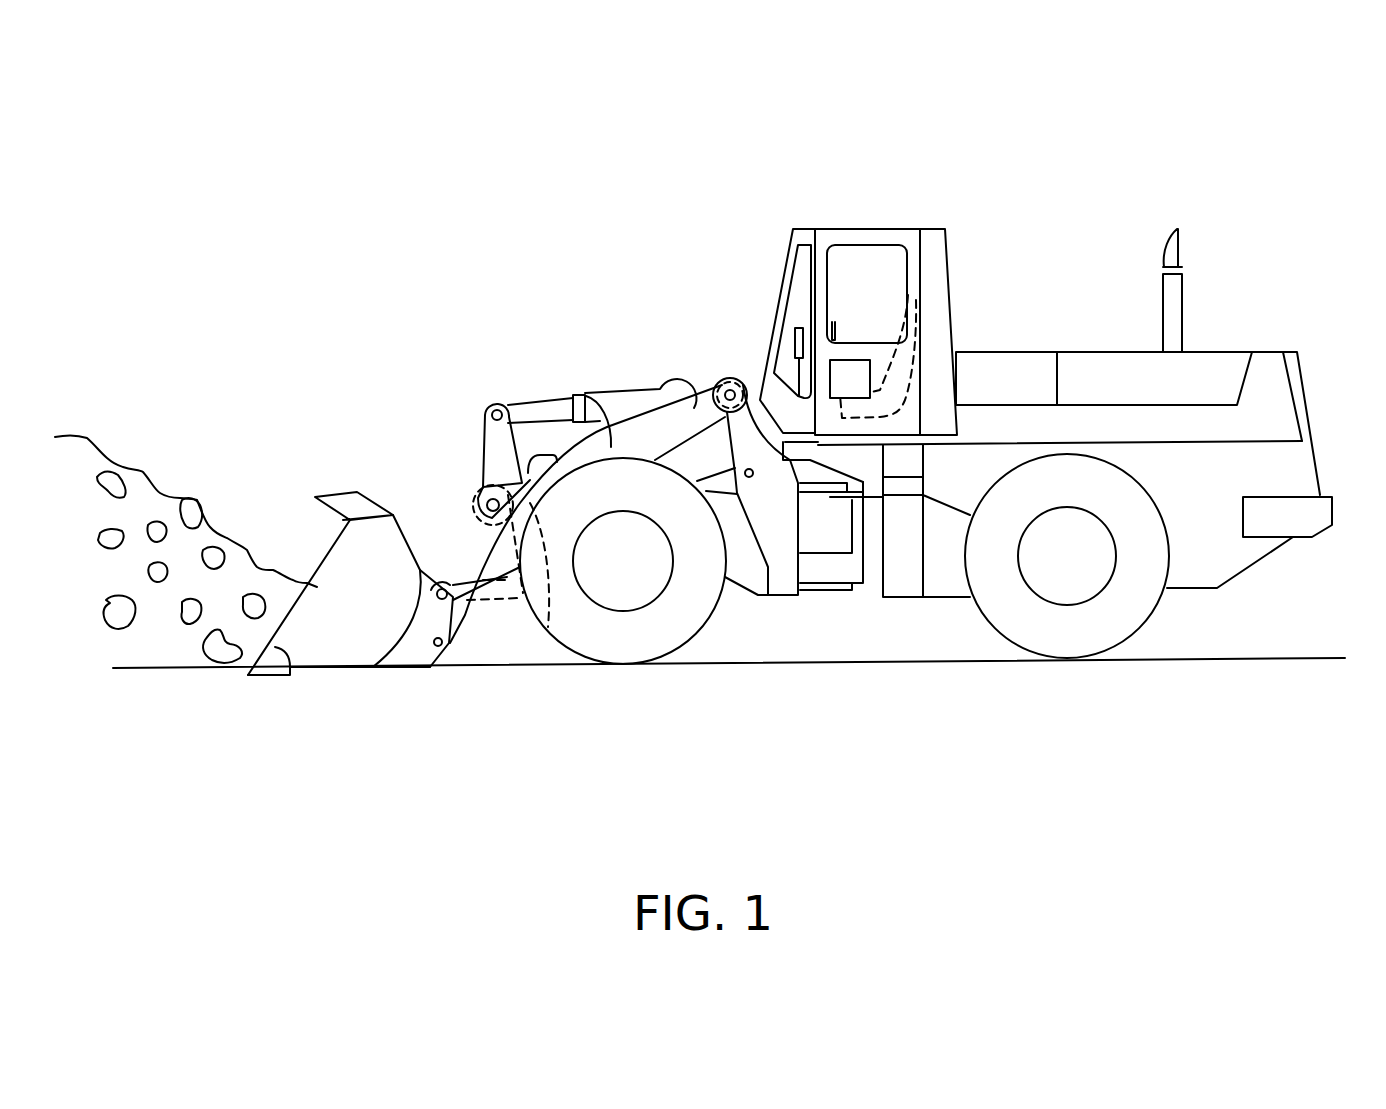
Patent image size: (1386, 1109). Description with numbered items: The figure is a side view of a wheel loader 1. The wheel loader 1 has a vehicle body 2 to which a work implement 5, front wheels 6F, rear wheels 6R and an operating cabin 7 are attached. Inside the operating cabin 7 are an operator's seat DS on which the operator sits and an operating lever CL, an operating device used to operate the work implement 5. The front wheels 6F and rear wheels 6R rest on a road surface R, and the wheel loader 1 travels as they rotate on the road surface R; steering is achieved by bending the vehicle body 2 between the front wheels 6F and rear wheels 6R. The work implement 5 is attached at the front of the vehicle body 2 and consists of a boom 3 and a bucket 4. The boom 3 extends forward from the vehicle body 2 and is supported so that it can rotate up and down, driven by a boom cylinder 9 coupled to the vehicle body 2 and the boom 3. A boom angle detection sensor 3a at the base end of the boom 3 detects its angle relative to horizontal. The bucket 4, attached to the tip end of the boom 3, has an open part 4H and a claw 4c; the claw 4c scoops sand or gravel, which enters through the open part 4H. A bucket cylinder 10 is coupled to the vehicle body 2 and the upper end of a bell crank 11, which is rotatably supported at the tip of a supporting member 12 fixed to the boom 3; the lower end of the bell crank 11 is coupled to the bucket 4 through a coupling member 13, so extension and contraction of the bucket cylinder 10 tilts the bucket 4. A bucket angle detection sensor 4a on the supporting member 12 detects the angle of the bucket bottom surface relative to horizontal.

The wheel loader 1 is at (779, 449).
The vehicle body 2 is at (908, 565).
The boom 3 is at (573, 391).
The boom angle detection sensor 3a is at (731, 378).
The bucket 4 is at (396, 550).
The bucket angle detection sensor 4a is at (548, 627).
The claw 4c is at (275, 668).
The open part 4H is at (316, 532).
The work implement 5 is at (373, 323).
The front wheels 6F is at (610, 642).
The rear wheels 6R is at (1063, 640).
The operating cabin 7 is at (843, 287).
The boom cylinder 9 is at (715, 480).
The bucket cylinder 10 is at (633, 397).
The bell crank 11 is at (500, 448).
The supporting member 12 is at (602, 495).
The coupling member 13 is at (492, 600).
The operator's seat DS is at (878, 288).
The operating lever CL is at (803, 318).
The road surface R is at (1320, 648).